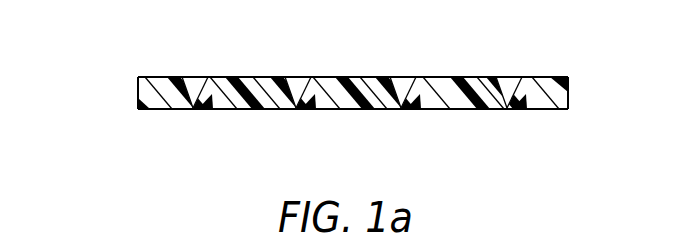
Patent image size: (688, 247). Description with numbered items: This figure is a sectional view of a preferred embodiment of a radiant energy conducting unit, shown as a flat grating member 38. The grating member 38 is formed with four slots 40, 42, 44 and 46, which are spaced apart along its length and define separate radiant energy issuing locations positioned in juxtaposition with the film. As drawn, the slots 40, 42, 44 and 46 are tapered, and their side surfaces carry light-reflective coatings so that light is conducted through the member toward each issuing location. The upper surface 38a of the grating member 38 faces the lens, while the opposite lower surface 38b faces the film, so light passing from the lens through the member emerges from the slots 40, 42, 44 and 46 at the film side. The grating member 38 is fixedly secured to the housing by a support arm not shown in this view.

The grating member 38 is at (138, 88).
The surface 38a is at (458, 77).
The surface 38b is at (458, 110).
The slot 40 is at (510, 83).
The slot 42 is at (403, 83).
The slot 44 is at (297, 83).
The slot 46 is at (194, 83).